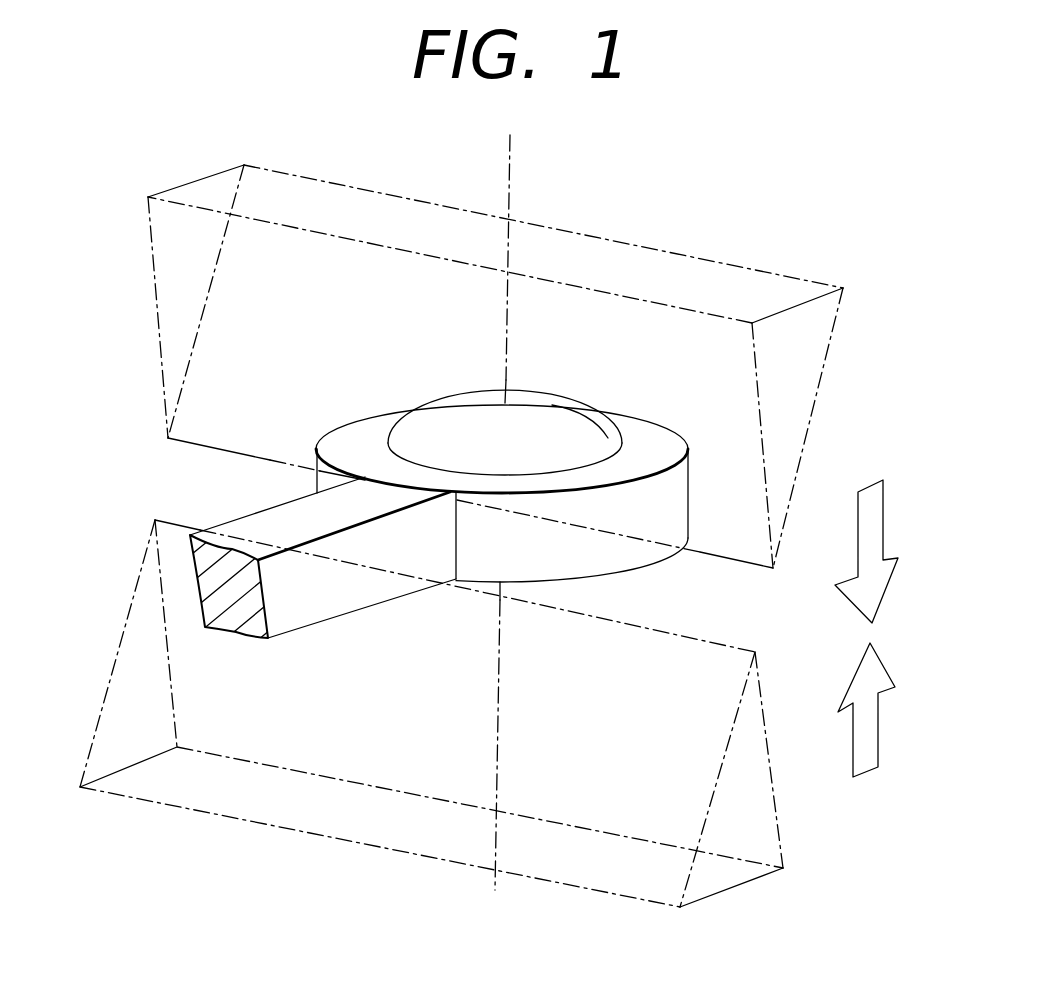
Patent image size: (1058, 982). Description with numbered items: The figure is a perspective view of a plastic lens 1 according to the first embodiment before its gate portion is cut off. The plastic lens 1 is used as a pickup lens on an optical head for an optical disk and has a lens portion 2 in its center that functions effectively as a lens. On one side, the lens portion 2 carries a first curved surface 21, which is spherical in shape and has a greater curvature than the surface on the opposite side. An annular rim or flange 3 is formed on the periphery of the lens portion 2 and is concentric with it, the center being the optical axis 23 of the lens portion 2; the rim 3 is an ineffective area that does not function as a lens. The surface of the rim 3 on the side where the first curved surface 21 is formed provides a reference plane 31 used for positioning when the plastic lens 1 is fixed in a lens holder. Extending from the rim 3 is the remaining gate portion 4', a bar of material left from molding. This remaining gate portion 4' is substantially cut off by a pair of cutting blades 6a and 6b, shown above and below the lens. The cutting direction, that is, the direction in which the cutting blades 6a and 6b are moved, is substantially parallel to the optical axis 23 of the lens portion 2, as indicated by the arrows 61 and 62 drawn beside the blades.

The plastic lens 1 is at (742, 243).
The lens portion 2 is at (505, 385).
The first curved surface 21 is at (535, 407).
The optical axis 23 is at (507, 202).
The annular rim 3 is at (506, 458).
The reference plane 31 is at (352, 443).
The remaining gate portion 4' is at (303, 579).
The cutting blade 6a is at (797, 390).
The cutting blade 6b is at (743, 815).
The arrow 61 is at (877, 528).
The arrow 62 is at (878, 727).